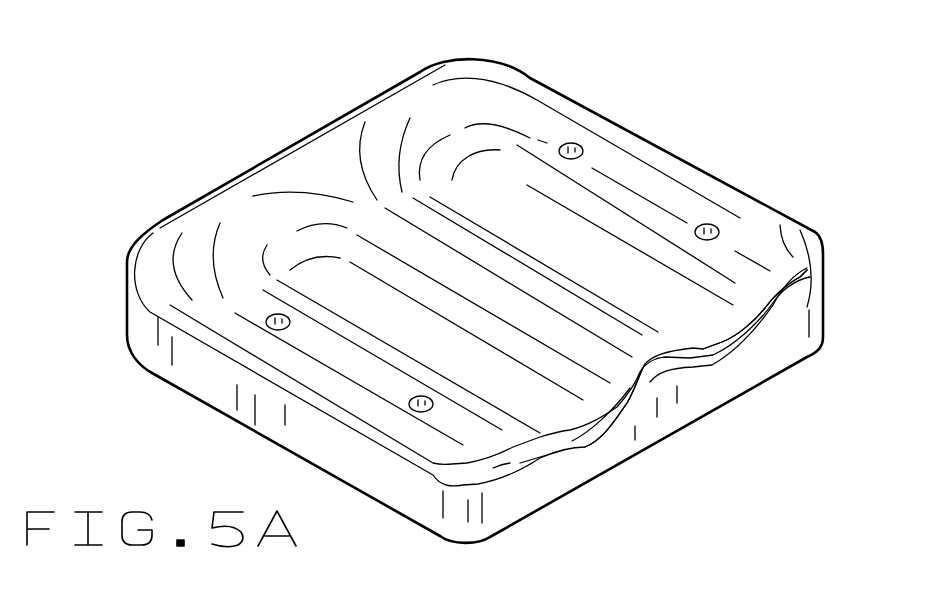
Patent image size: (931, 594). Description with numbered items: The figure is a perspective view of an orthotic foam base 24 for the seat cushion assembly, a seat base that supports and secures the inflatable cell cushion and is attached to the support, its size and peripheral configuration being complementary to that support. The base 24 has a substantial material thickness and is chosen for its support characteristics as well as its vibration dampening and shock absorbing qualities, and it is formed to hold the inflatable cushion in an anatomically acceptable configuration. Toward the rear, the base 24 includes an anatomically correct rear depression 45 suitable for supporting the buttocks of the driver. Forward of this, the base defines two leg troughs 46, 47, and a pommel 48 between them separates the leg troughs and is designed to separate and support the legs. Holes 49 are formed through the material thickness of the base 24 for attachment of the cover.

The orthotic foam base 24 is at (750, 192).
The rear depression 45 is at (464, 117).
The leg trough 46 is at (719, 316).
The leg trough 47 is at (569, 406).
The pommel 48 is at (659, 361).
The holes 49 is at (572, 145).